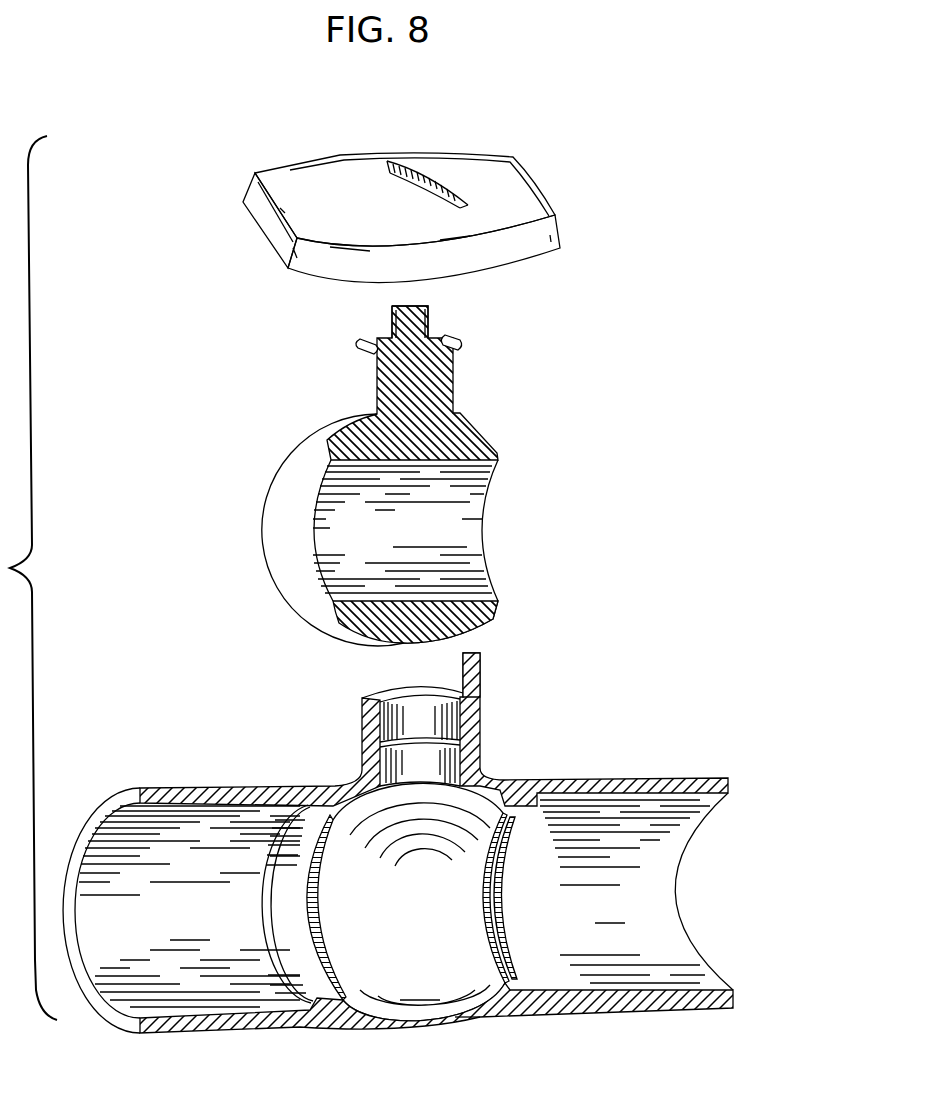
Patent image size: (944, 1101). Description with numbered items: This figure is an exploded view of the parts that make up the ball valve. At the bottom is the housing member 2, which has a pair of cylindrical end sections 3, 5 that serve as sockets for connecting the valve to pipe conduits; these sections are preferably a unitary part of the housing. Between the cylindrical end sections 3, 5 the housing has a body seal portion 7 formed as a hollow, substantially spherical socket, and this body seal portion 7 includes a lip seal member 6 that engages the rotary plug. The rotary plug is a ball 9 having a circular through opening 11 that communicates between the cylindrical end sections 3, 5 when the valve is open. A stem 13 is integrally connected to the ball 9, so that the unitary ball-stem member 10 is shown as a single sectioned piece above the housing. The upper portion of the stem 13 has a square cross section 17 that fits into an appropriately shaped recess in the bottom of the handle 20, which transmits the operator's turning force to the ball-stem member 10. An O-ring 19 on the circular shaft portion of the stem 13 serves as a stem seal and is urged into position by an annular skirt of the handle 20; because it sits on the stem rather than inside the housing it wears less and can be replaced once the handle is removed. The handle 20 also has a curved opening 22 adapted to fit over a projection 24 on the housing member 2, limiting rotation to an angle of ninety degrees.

The housing member 2 is at (414, 1035).
The cylindrical end section 3 is at (124, 933).
The cylindrical end section 5 is at (636, 891).
The lip seal member 6 is at (320, 912).
The body seal portion 7 is at (466, 1019).
The ball 9 is at (290, 533).
The ball-stem member 10 is at (416, 465).
The circular through opening 11 is at (405, 530).
The stem 13 is at (454, 381).
The square cross section 17 is at (422, 307).
The O-ring 19 is at (360, 350).
The handle 20 is at (531, 170).
The curved opening 22 is at (438, 172).
The projection on the housing 24 is at (478, 663).